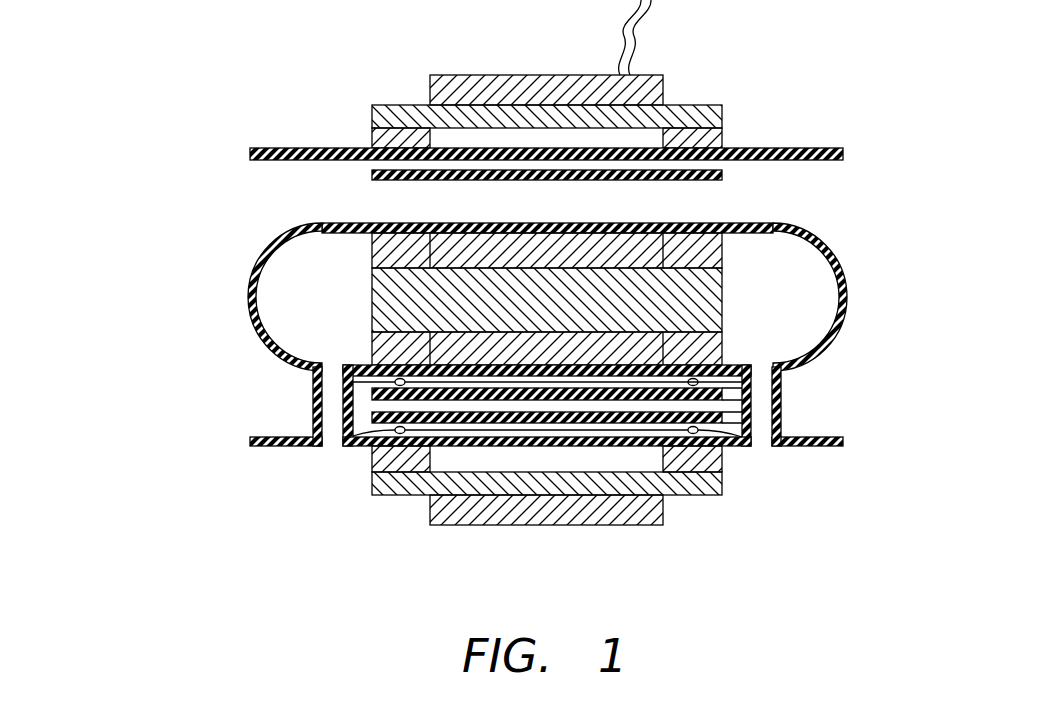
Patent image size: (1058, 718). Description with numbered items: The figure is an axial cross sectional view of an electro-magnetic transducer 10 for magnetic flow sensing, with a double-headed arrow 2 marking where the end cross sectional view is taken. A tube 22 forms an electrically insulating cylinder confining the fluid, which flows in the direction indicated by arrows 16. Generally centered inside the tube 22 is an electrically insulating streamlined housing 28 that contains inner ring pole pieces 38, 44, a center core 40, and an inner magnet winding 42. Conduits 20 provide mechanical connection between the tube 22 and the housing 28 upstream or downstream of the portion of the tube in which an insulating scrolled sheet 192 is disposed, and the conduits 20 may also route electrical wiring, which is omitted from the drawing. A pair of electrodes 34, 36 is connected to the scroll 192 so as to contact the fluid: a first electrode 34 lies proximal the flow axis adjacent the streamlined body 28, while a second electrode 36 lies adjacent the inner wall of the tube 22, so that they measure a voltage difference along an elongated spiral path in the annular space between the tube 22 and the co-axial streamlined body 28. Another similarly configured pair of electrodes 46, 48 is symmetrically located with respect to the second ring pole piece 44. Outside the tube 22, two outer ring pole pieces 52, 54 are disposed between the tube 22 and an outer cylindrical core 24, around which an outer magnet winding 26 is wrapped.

The double-headed arrow 2— 2 is at (478, 575).
The electro-magnetic transducer 10 is at (227, 64).
The arrows 16 is at (725, 203).
The conduits 20 is at (782, 404).
The tube 22 is at (792, 148).
The outer cylindrical core 24 is at (697, 105).
The outer magnet winding 26 is at (543, 75).
The streamlined housing 28 is at (270, 355).
The first electrode 34 is at (343, 383).
The second electrode 36 is at (345, 448).
The inner ring pole piece 38 is at (372, 246).
The center core 40 is at (377, 305).
The inner magnet winding 42 is at (612, 258).
The second ring pole piece 44 is at (723, 343).
The electrode 46 is at (750, 380).
The electrode 48 is at (750, 418).
The outer ring pole piece 52 is at (372, 140).
The outer ring pole piece 54 is at (722, 462).
The insulating scrolled sheet 192 is at (372, 175).